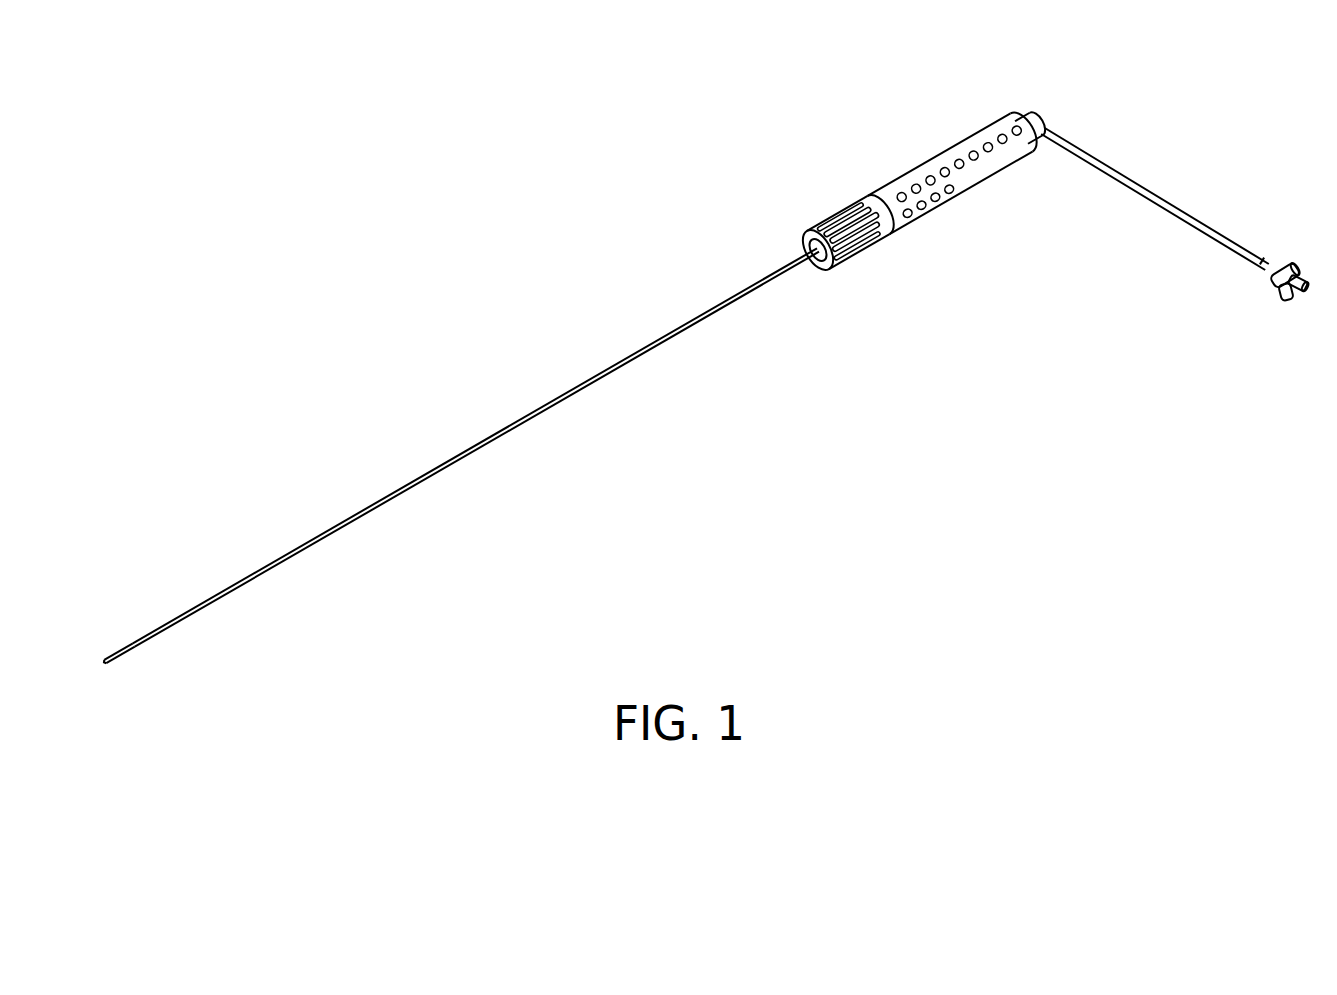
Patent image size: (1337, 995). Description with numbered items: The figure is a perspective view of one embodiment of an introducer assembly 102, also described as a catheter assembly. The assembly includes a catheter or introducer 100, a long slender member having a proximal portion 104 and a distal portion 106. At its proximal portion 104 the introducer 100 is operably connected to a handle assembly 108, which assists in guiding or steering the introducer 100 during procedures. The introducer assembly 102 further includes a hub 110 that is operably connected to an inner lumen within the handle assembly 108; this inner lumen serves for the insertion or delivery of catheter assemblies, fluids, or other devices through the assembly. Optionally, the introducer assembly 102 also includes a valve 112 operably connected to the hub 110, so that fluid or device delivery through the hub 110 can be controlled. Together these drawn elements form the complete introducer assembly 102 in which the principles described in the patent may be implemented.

The introducer 100 is at (383, 472).
The introducer assembly 102 is at (607, 278).
The proximal portion 104 is at (822, 292).
The distal portion 106 is at (117, 680).
The handle assembly 108 is at (922, 148).
The hub 110 is at (1043, 112).
The valve 112 is at (1300, 262).